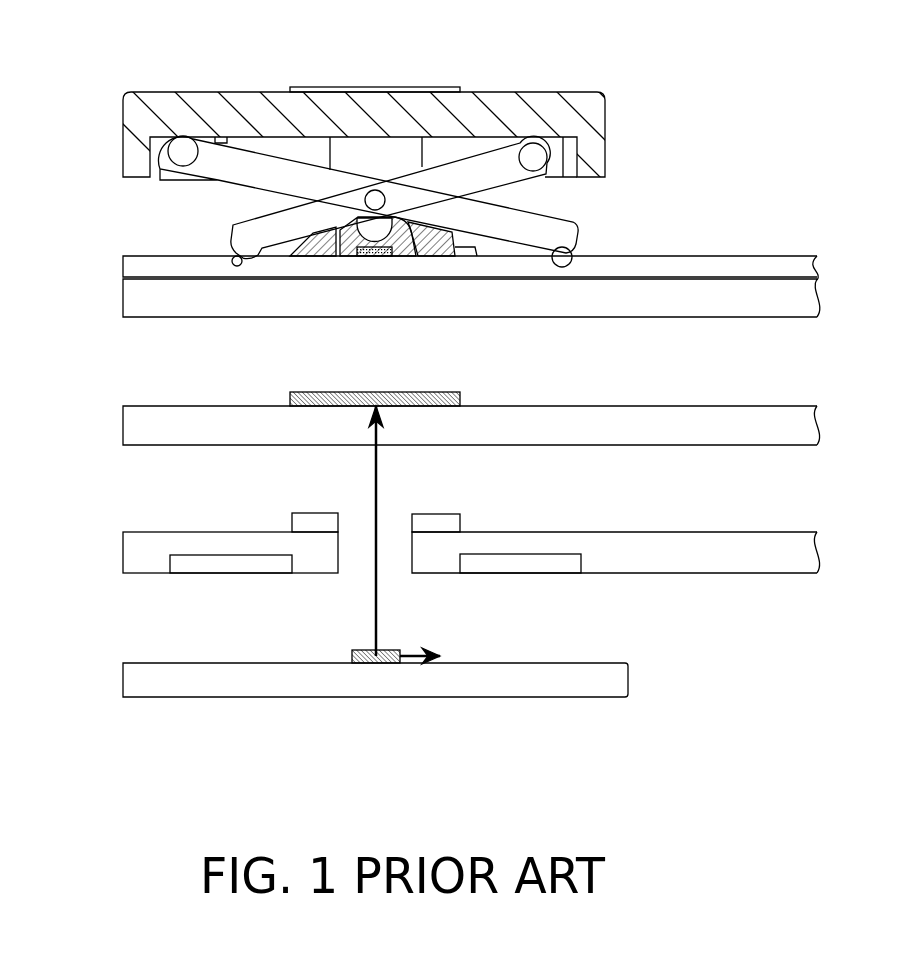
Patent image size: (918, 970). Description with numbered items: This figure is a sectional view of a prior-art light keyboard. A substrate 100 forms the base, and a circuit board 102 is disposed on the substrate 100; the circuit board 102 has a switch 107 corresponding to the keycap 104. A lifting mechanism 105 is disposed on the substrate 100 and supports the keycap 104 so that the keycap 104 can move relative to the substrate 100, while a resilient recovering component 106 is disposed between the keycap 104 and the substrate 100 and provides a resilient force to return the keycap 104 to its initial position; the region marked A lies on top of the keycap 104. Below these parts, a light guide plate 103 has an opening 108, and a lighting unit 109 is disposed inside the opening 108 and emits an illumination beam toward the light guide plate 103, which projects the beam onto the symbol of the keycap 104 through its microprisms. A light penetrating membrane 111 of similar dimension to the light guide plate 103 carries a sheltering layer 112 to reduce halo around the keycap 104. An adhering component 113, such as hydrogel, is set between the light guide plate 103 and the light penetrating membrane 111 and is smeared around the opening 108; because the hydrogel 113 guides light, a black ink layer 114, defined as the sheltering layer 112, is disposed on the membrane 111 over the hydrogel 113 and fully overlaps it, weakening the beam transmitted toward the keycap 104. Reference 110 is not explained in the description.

The substrate 100 is at (143, 302).
The circuit board 102 is at (143, 271).
The light guide plate 103 is at (143, 556).
The keycap 104 is at (143, 117).
The lifting mechanism 105 is at (277, 173).
The resilient recovering component 106 is at (292, 257).
The switch 107 is at (392, 250).
The opening 108 is at (357, 502).
The lighting unit 109 is at (352, 659).
The cavity 110 is at (215, 563).
The light penetrating membrane 111 is at (143, 431).
The sheltering layer 112 is at (375, 392).
The adhering component 113 is at (305, 521).
The black ink layer 114 is at (290, 402).
The region A is at (376, 86).